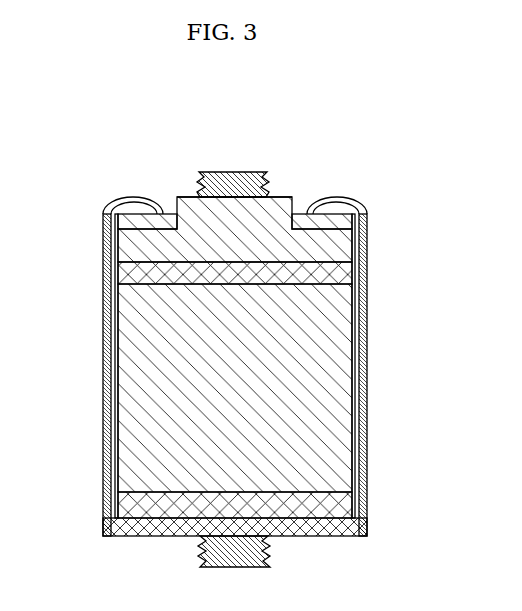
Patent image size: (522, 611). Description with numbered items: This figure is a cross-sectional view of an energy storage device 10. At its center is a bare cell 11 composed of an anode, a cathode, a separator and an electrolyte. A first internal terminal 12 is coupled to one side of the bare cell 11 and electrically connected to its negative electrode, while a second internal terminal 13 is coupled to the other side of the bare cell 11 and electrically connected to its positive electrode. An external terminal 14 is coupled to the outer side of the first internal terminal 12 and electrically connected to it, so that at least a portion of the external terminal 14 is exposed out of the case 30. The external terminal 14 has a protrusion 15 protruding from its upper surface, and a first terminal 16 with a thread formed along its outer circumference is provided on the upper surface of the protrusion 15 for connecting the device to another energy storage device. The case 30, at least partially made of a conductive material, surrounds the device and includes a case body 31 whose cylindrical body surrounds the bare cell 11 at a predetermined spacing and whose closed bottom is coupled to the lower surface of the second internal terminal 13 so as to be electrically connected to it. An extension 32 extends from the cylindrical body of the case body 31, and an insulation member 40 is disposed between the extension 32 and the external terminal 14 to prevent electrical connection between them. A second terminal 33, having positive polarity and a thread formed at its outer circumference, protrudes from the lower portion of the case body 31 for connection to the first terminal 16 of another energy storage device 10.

The energy storage device 10 is at (356, 343).
The bare cell 11 is at (345, 382).
The first internal terminal 12 is at (345, 270).
The second internal terminal 13 is at (345, 505).
The external terminal 14 is at (345, 245).
The protrusion 15 is at (285, 198).
The first terminal 16 is at (240, 172).
The case 30 is at (101, 381).
The case body 31 is at (120, 537).
The extension 32 is at (104, 199).
The second terminal 33 is at (236, 567).
The insulation member 40 is at (318, 208).